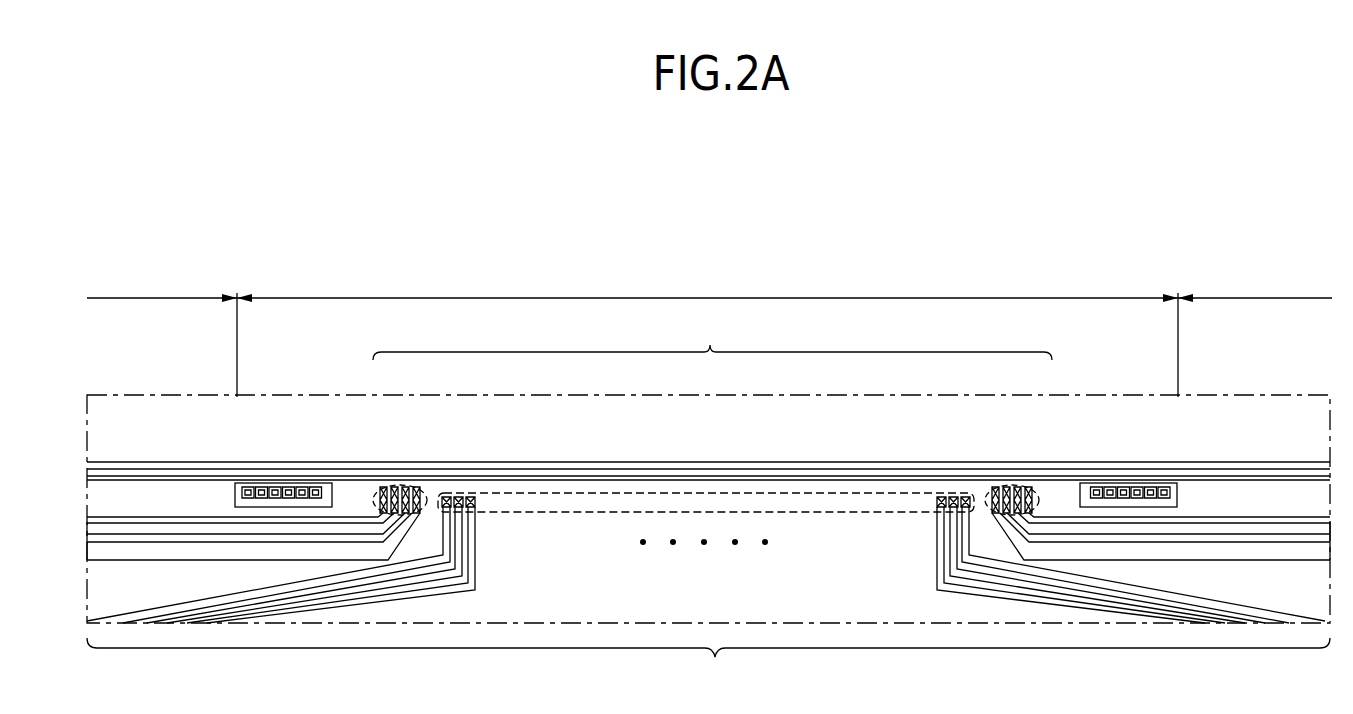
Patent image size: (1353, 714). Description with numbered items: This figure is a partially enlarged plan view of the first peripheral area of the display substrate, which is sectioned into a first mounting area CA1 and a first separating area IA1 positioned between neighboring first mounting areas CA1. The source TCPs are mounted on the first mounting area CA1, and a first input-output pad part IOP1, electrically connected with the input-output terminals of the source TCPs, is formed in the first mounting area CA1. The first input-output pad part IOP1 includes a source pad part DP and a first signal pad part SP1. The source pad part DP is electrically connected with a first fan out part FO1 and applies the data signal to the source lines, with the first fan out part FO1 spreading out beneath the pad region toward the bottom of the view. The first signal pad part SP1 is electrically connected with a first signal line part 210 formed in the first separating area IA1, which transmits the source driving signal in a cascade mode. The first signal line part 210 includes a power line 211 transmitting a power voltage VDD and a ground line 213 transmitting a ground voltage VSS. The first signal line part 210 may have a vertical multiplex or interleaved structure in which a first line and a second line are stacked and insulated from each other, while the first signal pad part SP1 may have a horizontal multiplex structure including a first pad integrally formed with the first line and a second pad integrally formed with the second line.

The first separating area IA1 is at (709, 335).
The first mounting area CA1 is at (707, 288).
The first input-output pad part IOP1 is at (712, 341).
The first signal pad part SP1 is at (990, 487).
The source pad part DP is at (704, 493).
The first signal line part 210 is at (1315, 362).
The power line 211 is at (1225, 522).
The ground line 213 is at (1284, 538).
The first fan out part FO1 is at (708, 663).